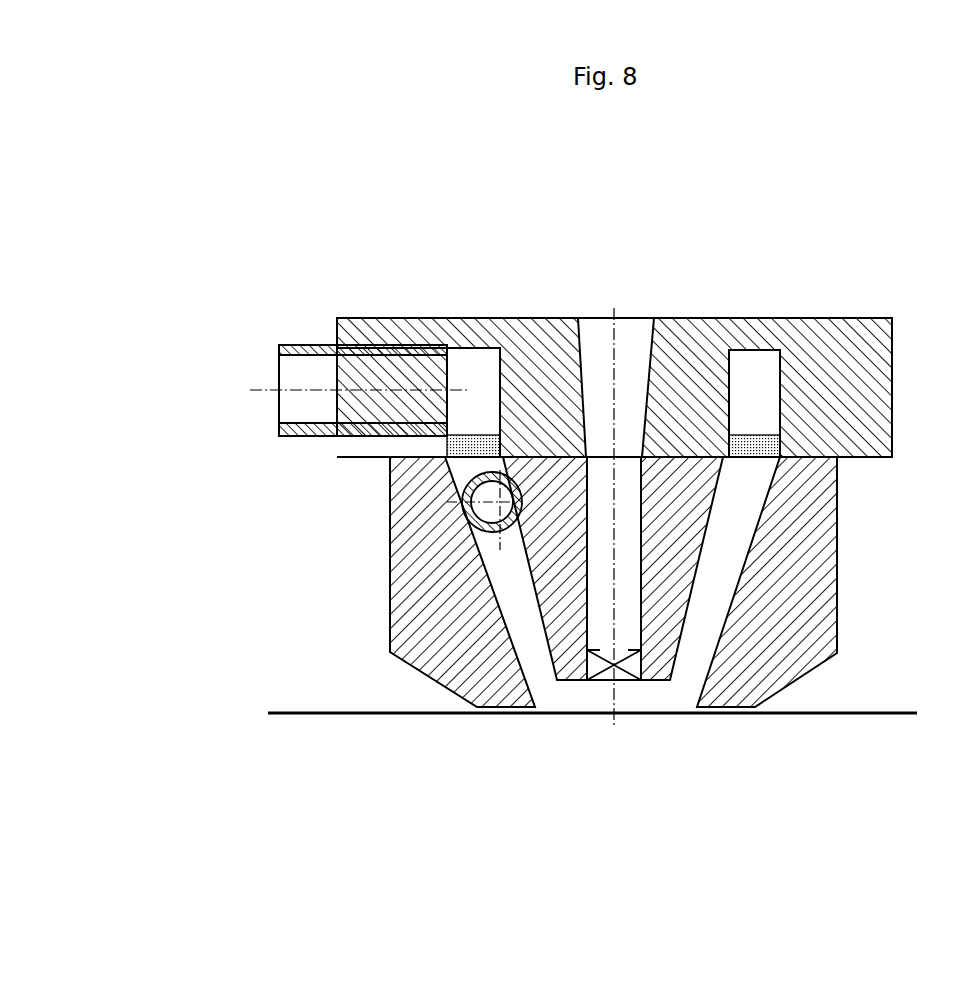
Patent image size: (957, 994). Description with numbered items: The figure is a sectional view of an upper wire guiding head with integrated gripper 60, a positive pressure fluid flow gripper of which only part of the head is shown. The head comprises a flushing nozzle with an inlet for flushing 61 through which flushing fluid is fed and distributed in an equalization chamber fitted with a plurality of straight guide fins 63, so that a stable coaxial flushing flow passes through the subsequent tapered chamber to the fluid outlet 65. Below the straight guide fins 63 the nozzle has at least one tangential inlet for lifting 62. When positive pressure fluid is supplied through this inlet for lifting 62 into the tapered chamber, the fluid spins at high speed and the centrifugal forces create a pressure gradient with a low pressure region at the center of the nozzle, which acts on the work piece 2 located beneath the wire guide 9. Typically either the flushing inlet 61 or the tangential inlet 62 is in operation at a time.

The upper wire guiding head with integrated gripper 60 is at (278, 214).
The inlet for flushing 61 is at (313, 370).
The straight guide fin 63 is at (460, 440).
The inlet for lifting 62 is at (480, 507).
The work piece 2 is at (359, 708).
The fluid outlet 65 is at (670, 695).
The wire guide 9 is at (598, 664).